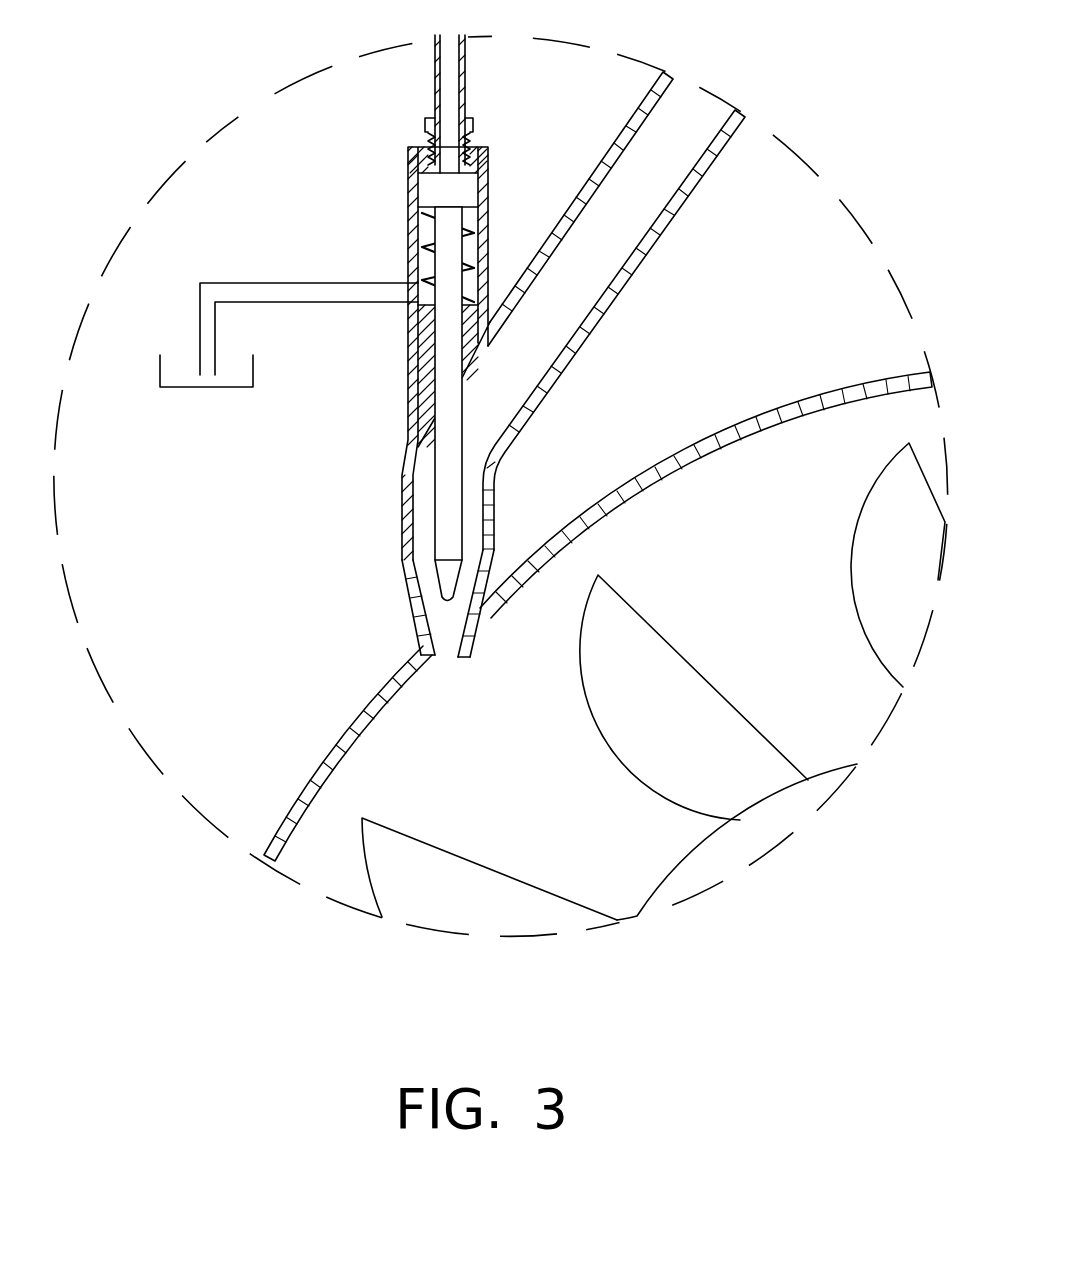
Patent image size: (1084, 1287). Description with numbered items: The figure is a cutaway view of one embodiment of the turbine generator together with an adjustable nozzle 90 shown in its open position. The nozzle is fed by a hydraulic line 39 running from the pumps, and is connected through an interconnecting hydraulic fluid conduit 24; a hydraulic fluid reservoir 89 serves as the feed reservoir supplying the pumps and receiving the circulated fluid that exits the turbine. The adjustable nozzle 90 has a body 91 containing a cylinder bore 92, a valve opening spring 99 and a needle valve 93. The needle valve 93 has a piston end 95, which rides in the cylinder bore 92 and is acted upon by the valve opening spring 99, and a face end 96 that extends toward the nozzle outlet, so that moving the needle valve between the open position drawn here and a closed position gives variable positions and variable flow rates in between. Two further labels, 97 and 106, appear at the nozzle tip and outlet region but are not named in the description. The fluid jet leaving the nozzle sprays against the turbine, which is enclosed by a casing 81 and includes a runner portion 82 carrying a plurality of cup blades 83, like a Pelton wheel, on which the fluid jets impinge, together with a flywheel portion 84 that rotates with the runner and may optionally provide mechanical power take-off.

The interconnecting hydraulic fluid conduit 24 is at (432, 82).
The hydraulic line 39 is at (692, 182).
The casing 81 is at (866, 392).
The runner portion 82 is at (315, 857).
The cup blade 83 is at (880, 647).
The flywheel portion 84 is at (702, 857).
The hydraulic fluid reservoir 89 is at (160, 372).
The adjustable nozzle 90 is at (407, 429).
The body 91 is at (412, 166).
The cylinder bore 92 is at (470, 254).
The needle valve 93 is at (454, 433).
The piston end 95 is at (425, 192).
The face end 96 is at (433, 575).
The nozzle orifice 97 is at (440, 646).
The valve opening spring 99 is at (430, 243).
The nozzle outlet 106 is at (448, 660).